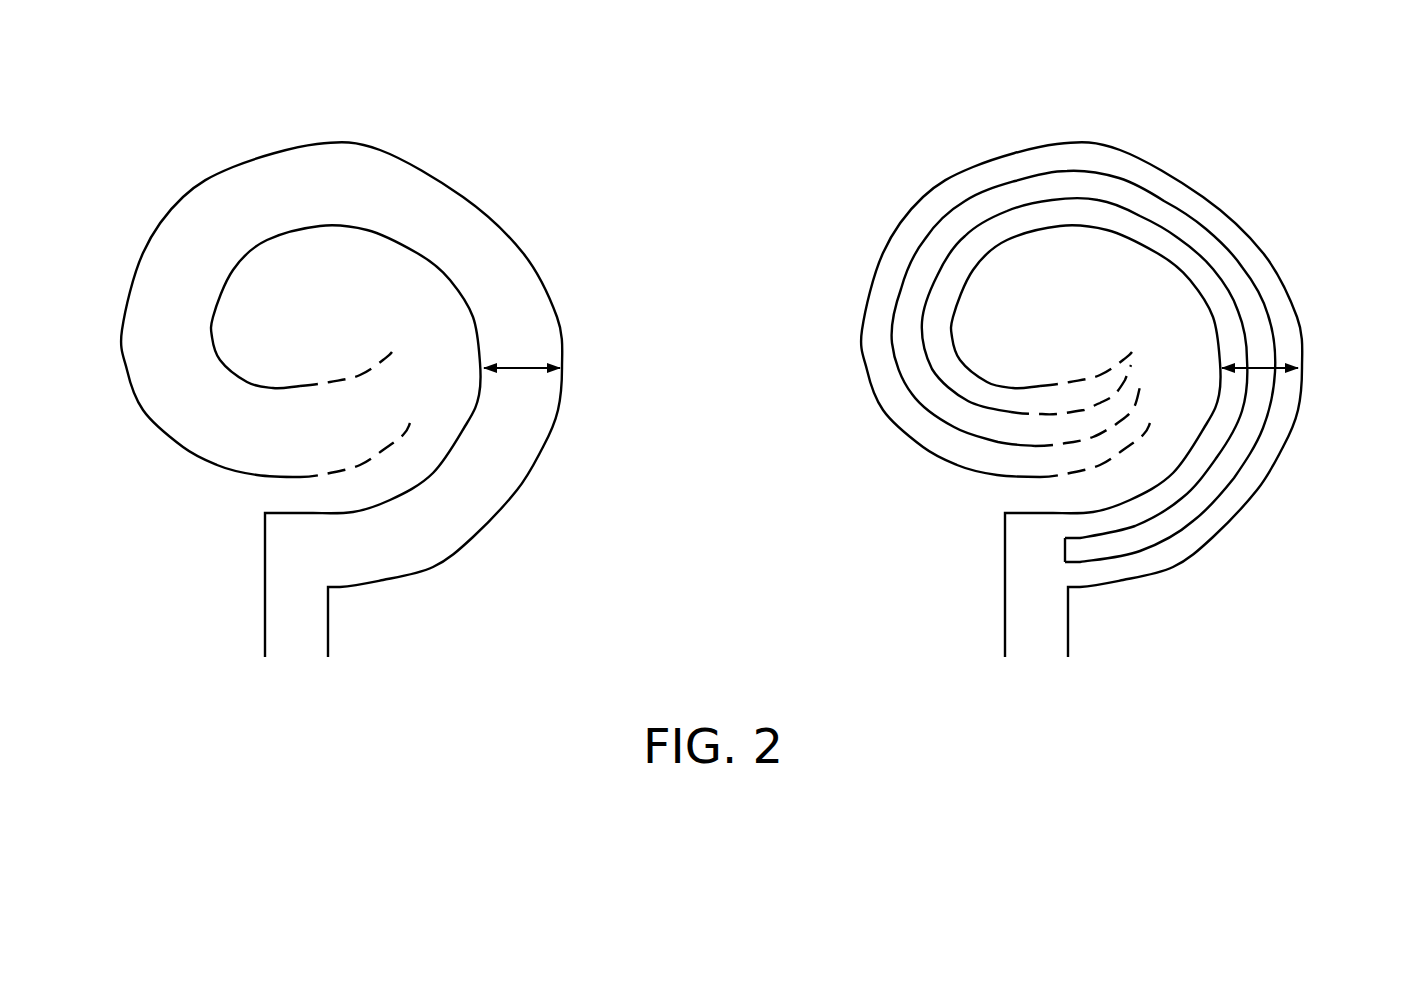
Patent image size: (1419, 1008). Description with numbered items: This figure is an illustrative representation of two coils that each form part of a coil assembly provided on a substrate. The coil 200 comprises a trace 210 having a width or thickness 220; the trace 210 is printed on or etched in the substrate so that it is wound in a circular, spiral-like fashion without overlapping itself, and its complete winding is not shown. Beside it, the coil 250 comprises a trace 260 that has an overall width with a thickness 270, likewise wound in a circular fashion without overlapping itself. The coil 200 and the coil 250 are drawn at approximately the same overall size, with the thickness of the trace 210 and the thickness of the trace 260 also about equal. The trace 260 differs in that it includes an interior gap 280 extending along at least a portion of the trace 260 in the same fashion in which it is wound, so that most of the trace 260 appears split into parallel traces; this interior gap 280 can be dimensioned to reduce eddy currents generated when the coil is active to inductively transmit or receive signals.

The coil 200 is at (462, 88).
The trace 210 is at (298, 593).
The width or thickness 220 is at (525, 357).
The coil 250 is at (1208, 88).
The trace 260 is at (1036, 585).
The thickness 270 is at (1264, 357).
The interior gap 280 is at (1179, 516).